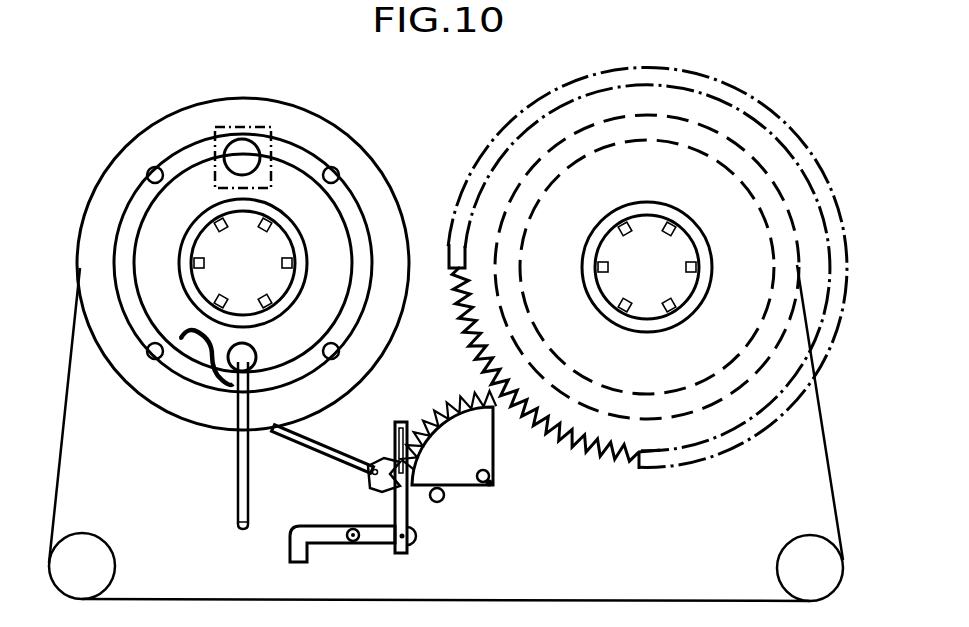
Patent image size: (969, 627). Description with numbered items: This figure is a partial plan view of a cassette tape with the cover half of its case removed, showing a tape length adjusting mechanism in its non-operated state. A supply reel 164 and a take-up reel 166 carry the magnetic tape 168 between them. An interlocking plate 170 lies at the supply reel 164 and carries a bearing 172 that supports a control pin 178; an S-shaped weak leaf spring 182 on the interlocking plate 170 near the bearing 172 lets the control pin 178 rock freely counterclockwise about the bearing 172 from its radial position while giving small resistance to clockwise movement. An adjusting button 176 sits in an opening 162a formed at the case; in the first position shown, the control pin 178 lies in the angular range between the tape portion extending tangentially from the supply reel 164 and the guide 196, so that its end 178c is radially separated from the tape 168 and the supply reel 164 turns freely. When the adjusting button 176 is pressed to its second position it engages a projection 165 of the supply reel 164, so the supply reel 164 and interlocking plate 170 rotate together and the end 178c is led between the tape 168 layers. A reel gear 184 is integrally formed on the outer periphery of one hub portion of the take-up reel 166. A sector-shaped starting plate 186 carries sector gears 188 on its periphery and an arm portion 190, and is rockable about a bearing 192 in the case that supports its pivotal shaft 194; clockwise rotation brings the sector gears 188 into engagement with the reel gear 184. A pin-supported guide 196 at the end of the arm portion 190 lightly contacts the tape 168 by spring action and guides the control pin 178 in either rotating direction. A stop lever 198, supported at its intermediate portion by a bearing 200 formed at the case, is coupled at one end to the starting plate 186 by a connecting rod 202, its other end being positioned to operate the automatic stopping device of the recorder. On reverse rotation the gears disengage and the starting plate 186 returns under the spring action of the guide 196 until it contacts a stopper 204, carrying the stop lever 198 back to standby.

The opening 162a is at (215, 148).
The adjusting button 176 is at (258, 158).
The projection 165 is at (150, 170).
The supply reel 164 is at (334, 174).
The interlocking plate 170 is at (350, 224).
The bearing 172 is at (256, 352).
The leaf spring 182 is at (203, 365).
The control pin 178 is at (237, 462).
The end of control pin 178c is at (242, 530).
The magnetic tape 168 is at (57, 484).
The take-up reel 166 is at (796, 152).
The reel gear 184 is at (604, 455).
The starting plate 186 is at (493, 430).
The sector gears 188 is at (455, 408).
The arm portion 190 is at (380, 465).
The bearing 192 is at (442, 501).
The pivotal shaft 194 is at (490, 481).
The guide 196 is at (302, 442).
The stop lever 198 is at (290, 545).
The bearing 200 is at (353, 542).
The connecting rod 202 is at (408, 520).
The stopper 204 is at (418, 533).